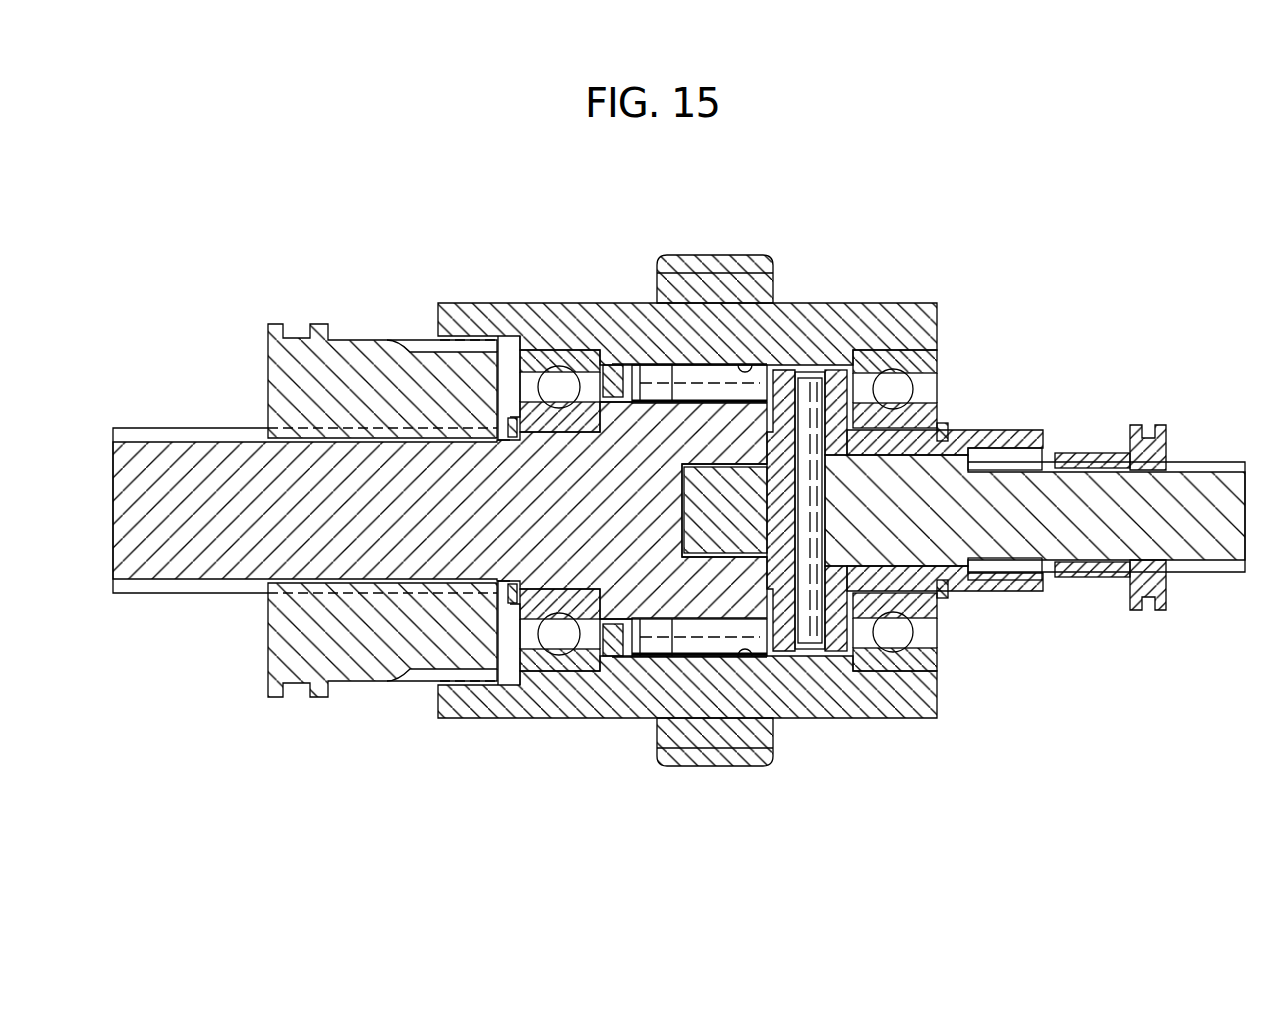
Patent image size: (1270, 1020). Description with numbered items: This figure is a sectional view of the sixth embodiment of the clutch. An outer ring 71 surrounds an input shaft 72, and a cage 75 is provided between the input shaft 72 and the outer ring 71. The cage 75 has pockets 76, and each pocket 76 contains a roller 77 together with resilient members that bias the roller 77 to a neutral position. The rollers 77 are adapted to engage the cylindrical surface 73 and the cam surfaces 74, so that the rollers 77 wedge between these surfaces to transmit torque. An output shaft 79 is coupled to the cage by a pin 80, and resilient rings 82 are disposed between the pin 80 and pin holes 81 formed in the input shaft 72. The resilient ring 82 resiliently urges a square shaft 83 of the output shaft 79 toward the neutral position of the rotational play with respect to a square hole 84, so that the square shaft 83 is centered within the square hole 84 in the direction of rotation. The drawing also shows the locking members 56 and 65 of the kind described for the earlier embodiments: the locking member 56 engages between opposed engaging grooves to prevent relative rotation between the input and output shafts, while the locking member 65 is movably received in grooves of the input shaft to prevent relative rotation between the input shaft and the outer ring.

The locking member 56 is at (1080, 452).
The locking member 65 is at (371, 368).
The outer ring 71 is at (863, 340).
The input shaft 72 is at (172, 470).
The cylindrical surface 73 is at (743, 366).
The cam surface 74 is at (668, 362).
The cage 75 is at (856, 375).
The pocket 76 is at (603, 355).
The roller 77 is at (713, 381).
The output shaft 79 is at (1214, 495).
The pin 80 is at (943, 612).
The pin hole 81 is at (824, 560).
The resilient ring 82 is at (775, 657).
The square shaft 83 is at (700, 515).
The square hole 84 is at (735, 467).